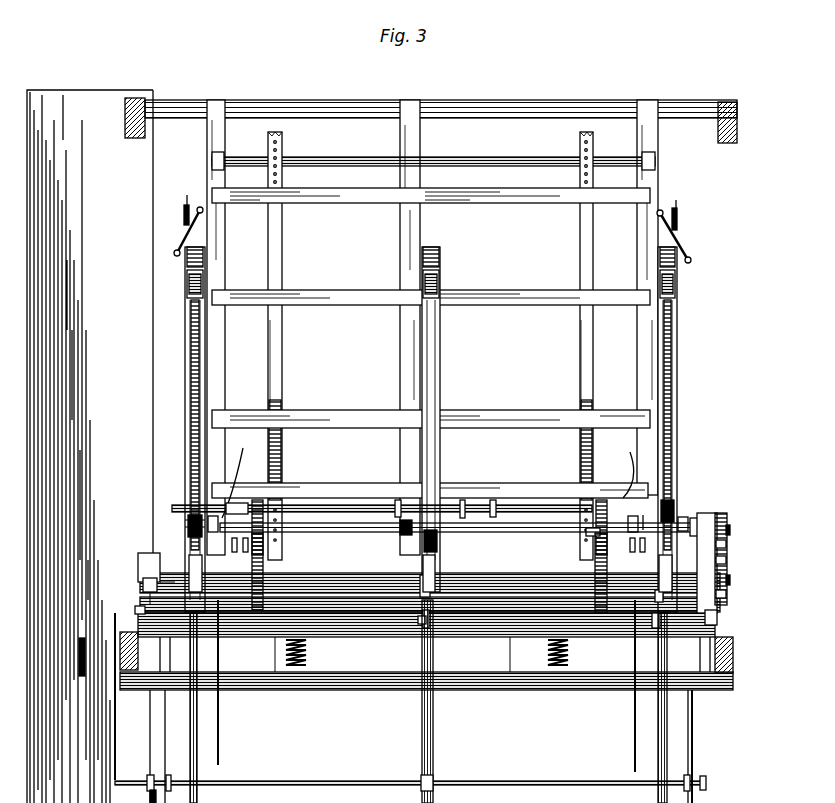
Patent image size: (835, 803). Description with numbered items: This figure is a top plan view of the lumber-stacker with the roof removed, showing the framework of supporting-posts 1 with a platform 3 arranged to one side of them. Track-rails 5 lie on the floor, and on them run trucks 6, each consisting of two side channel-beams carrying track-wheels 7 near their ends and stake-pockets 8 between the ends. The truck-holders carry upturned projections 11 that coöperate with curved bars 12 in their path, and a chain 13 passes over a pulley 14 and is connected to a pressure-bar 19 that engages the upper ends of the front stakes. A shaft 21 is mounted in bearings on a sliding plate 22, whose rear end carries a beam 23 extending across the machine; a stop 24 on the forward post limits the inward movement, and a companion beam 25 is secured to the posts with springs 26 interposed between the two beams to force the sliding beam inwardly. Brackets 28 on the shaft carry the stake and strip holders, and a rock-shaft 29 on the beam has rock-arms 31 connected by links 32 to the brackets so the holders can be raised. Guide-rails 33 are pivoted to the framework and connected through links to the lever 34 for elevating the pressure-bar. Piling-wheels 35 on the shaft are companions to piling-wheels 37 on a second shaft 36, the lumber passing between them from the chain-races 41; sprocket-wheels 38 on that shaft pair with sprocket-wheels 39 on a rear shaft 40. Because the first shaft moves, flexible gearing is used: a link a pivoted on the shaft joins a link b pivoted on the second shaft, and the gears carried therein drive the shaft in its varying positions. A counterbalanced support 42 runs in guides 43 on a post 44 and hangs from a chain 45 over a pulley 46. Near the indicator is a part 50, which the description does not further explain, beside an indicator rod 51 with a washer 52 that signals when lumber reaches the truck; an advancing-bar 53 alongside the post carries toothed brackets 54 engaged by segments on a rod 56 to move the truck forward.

The supporting-posts 1 is at (125, 122).
The platform 3 is at (90, 446).
The track-rails 5 is at (198, 737).
The truck 6 is at (186, 344).
The track-wheels 7 is at (190, 286).
The stake-pockets 8 is at (188, 256).
The upturned projections 11 is at (192, 234).
The curved bars 12 is at (190, 230).
The chain or strap 13 is at (447, 190).
The pulley 14 is at (184, 210).
The pressure-bar 19 is at (430, 601).
The shaft 21 is at (287, 590).
The sliding plate 22 is at (140, 578).
The beam 23 is at (426, 624).
The stop 24 is at (137, 612).
The companion beam 25 is at (426, 682).
The springs 26 is at (308, 656).
The bracket 28 is at (192, 570).
The rock-shaft 29 is at (274, 632).
The rock-arms 31 is at (420, 596).
The links 32 is at (432, 613).
The guide-rails 33 is at (694, 748).
The lever 34 is at (115, 712).
The piling-wheels 35 is at (265, 565).
The shaft 36 is at (508, 531).
The piling-wheels 37 is at (257, 500).
The sprocket-wheels 38 is at (278, 520).
The sprocket-wheels 39 is at (283, 140).
The shaft 40 is at (440, 163).
The chain-races 41 is at (282, 353).
The counterbalanced support 42 is at (234, 552).
The guides 43 is at (246, 552).
The post 44 is at (222, 518).
The chain or cord 45 is at (643, 515).
The pulley 46 is at (680, 517).
The clutch block 50 is at (143, 590).
The rod 51 is at (186, 527).
The washer 52 is at (186, 520).
The advancing-bar 53 is at (462, 500).
The brackets 54 is at (428, 474).
The rod 56 is at (340, 492).
The link a is at (730, 580).
The link b is at (730, 530).